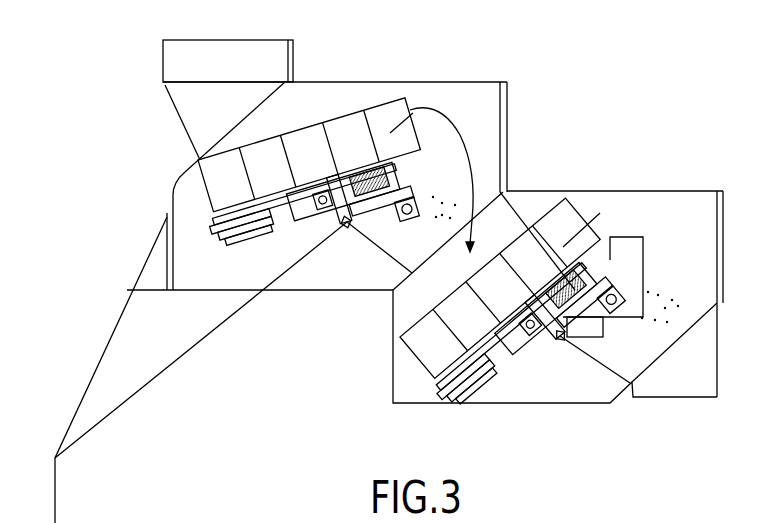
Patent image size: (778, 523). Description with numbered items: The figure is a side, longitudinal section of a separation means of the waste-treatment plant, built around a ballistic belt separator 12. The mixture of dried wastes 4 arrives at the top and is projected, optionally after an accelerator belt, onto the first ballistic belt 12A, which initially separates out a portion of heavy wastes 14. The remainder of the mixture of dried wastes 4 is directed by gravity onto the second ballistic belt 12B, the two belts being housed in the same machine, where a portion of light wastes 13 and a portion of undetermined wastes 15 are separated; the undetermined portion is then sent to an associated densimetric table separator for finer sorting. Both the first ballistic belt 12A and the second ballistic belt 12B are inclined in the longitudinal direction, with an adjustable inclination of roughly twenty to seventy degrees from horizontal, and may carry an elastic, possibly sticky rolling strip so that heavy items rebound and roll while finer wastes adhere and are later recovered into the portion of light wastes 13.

The mixture of dried wastes 4 is at (248, 140).
The ballistic belt separator 12 is at (431, 216).
The first ballistic belt 12A is at (303, 183).
The second ballistic belt 12B is at (522, 300).
The portion of light wastes 13 is at (603, 232).
The portion of heavy wastes 14 is at (263, 188).
The portion of undetermined wastes 15 is at (480, 305).